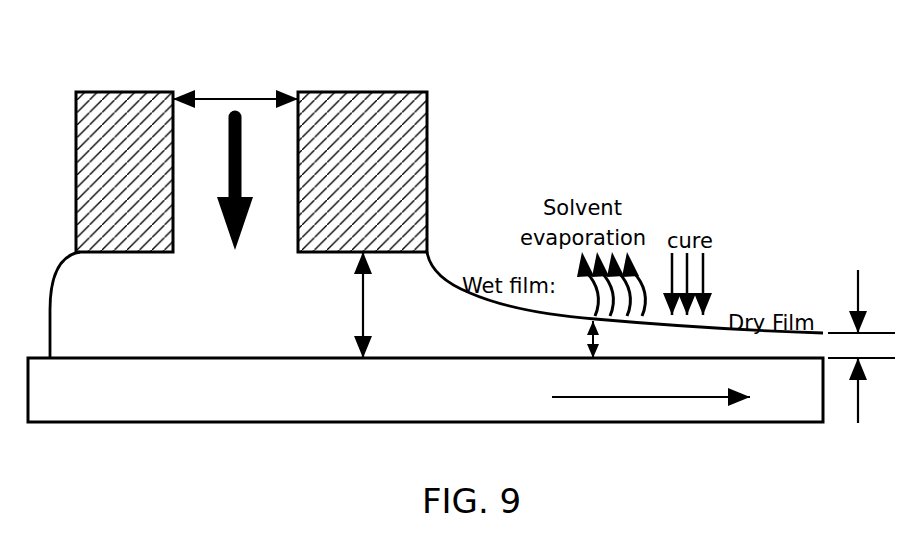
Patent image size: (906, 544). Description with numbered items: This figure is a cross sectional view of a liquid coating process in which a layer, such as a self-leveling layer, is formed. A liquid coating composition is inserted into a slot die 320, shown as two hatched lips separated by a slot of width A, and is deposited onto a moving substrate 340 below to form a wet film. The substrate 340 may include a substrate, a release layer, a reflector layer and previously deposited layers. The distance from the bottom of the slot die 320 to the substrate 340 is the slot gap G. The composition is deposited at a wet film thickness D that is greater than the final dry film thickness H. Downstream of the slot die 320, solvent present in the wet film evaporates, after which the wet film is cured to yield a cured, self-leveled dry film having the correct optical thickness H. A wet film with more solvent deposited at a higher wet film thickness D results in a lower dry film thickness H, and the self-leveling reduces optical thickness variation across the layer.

The slot die 320 is at (363, 92).
The substrate 340 is at (78, 422).
The slot gap width A is at (235, 85).
The slot gap G is at (373, 305).
The wet film thickness D is at (583, 339).
The dry film thickness H is at (861, 346).